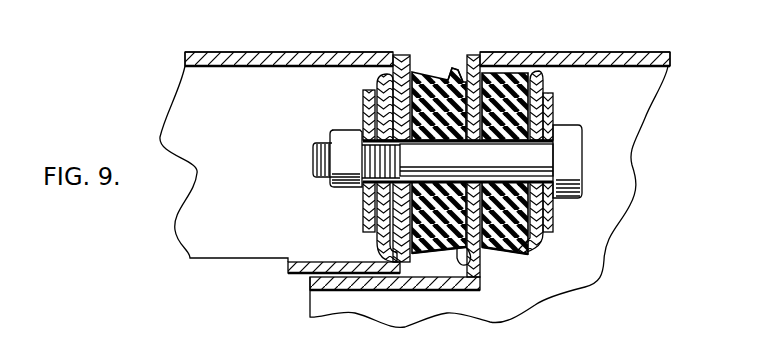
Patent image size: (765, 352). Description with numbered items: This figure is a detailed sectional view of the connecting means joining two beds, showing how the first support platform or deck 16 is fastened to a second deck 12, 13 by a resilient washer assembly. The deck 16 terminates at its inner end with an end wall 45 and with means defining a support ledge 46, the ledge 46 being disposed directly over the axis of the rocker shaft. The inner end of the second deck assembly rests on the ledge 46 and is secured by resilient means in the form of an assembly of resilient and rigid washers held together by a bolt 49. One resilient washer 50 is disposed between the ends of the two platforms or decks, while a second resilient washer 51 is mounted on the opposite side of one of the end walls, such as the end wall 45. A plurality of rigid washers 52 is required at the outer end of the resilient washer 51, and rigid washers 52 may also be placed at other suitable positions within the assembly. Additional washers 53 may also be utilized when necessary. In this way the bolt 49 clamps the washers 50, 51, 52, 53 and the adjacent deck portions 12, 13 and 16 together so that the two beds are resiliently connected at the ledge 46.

The panel 12 is at (632, 47).
The panel 13 is at (300, 21).
The support platform or deck 16 is at (571, 58).
The end wall 45 is at (462, 80).
The support ledge 46 is at (414, 266).
The bolt 49 is at (578, 148).
The resilient washer 50 is at (425, 72).
The second resilient washer 51 is at (487, 75).
The rigid washers 52 is at (377, 237).
The additional washers 53 is at (364, 99).